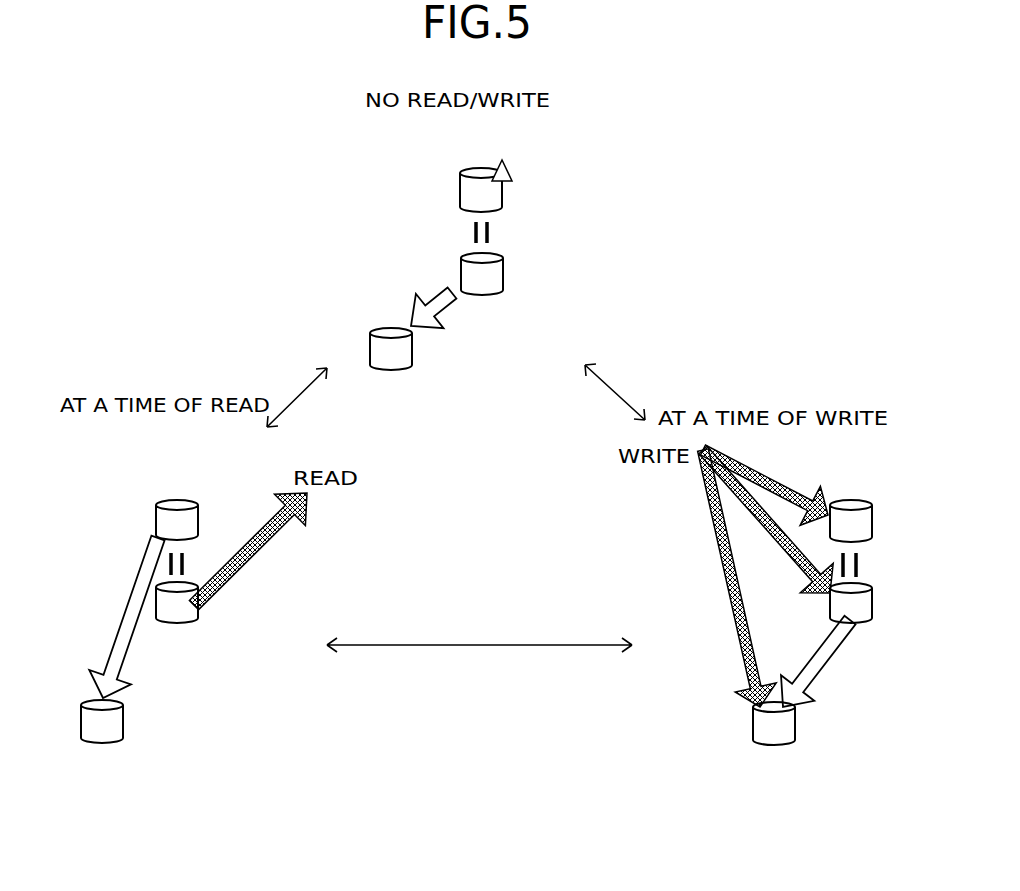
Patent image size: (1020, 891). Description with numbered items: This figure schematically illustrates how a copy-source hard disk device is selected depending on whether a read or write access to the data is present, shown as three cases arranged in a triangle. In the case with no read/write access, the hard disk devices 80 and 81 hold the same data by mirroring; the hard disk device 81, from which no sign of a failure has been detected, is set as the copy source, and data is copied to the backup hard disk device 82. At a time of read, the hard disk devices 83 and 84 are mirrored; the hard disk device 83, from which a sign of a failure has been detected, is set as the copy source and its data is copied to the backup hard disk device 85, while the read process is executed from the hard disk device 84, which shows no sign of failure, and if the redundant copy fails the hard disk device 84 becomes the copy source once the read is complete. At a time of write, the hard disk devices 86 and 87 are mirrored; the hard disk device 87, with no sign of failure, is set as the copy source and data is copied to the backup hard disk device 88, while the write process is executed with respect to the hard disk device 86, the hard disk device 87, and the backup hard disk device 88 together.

The hard disk device 80 is at (490, 168).
The hard disk device 81 is at (493, 276).
The backup hard disk device 82 is at (402, 350).
The hard disk device 83 is at (193, 500).
The hard disk device 84 is at (187, 612).
The backup hard disk device 85 is at (117, 725).
The hard disk device 86 is at (860, 499).
The hard disk device 87 is at (859, 615).
The backup hard disk device 88 is at (788, 728).